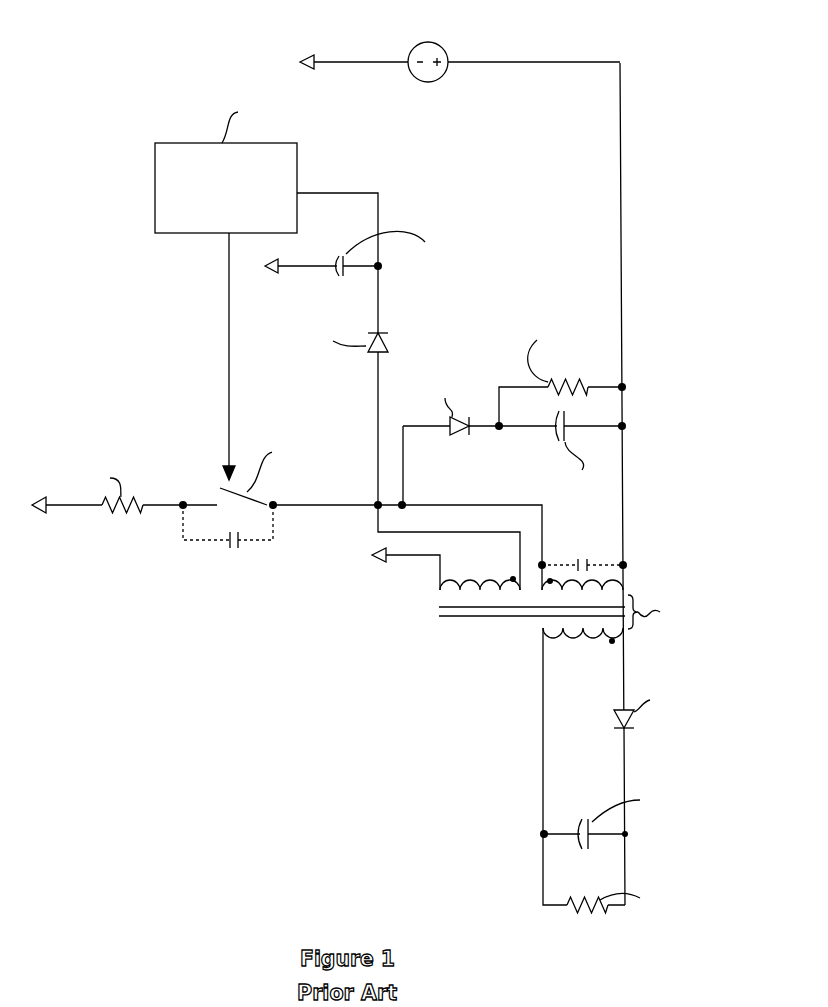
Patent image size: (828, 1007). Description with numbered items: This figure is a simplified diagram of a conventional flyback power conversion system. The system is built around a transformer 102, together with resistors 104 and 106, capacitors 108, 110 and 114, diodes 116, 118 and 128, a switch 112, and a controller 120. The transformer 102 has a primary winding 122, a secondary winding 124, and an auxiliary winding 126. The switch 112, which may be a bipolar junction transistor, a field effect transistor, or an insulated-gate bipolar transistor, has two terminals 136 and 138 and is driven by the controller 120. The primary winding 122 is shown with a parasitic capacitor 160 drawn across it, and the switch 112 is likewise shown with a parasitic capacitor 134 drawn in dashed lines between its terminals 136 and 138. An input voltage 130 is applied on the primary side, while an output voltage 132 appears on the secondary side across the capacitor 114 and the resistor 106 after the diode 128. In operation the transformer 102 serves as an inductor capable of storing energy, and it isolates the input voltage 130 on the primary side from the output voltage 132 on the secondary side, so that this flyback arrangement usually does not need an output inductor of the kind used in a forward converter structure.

The input voltage 130 is at (440, 50).
The controller 120 is at (297, 143).
The capacitor 108 is at (340, 255).
The diode 118 is at (388, 340).
The resistor 104 is at (565, 379).
The diode 116 is at (467, 436).
The capacitor 110 is at (556, 440).
The resistor 106 is at (120, 513).
The terminal 138 is at (183, 505).
The terminal 136 is at (273, 505).
The switch 112 is at (224, 501).
The parasitic capacitor 134 is at (238, 542).
The auxiliary winding 126 is at (440, 592).
The parasitic capacitor 160 is at (594, 564).
The primary winding 122 is at (623, 564).
The transformer 102 is at (638, 595).
The secondary winding 124 is at (625, 628).
The diode 128 is at (633, 728).
The capacitor 114 is at (544, 834).
The output voltage 132 is at (625, 877).